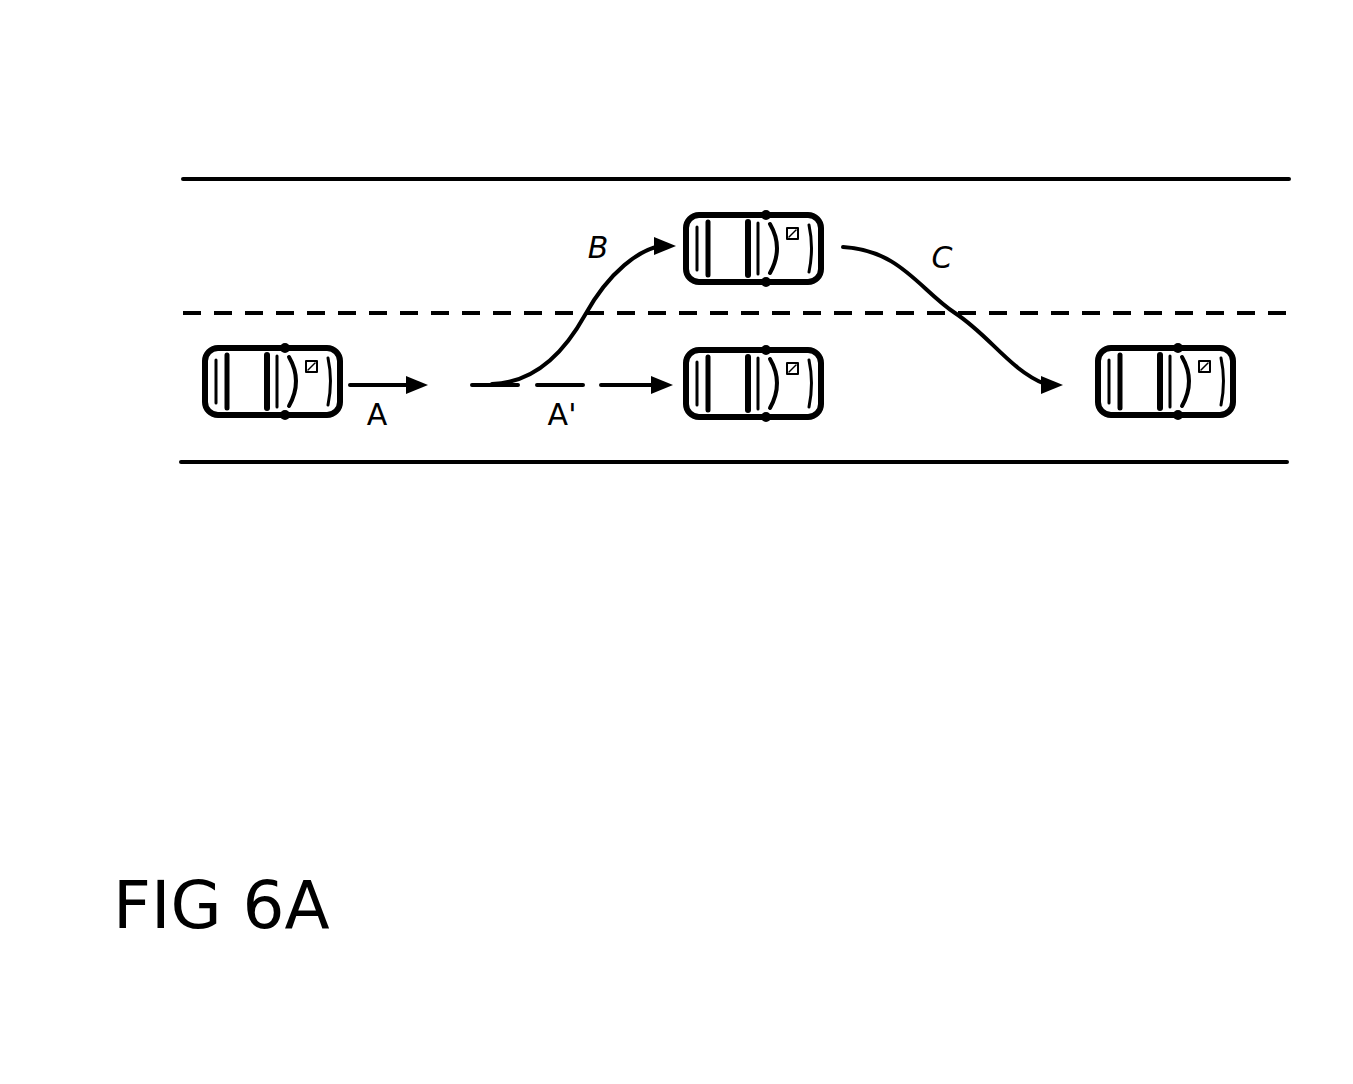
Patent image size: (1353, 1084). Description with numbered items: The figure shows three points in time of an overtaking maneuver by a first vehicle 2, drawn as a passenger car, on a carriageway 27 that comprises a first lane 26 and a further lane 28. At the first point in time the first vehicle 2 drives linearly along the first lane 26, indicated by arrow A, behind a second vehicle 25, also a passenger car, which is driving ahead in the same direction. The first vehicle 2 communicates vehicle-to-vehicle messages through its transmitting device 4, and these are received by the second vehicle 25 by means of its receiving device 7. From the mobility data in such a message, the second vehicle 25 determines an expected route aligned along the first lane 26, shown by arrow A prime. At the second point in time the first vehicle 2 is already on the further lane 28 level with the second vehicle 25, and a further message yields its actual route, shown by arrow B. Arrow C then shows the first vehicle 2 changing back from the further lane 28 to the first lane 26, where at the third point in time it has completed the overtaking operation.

The first vehicle 2 is at (243, 390).
The transmitting device 4 is at (318, 412).
The receiving device 7 is at (820, 415).
The second vehicle 25 is at (730, 393).
The first lane 26 is at (943, 440).
The carriageway 27 is at (1306, 420).
The further lane 28 is at (1088, 216).